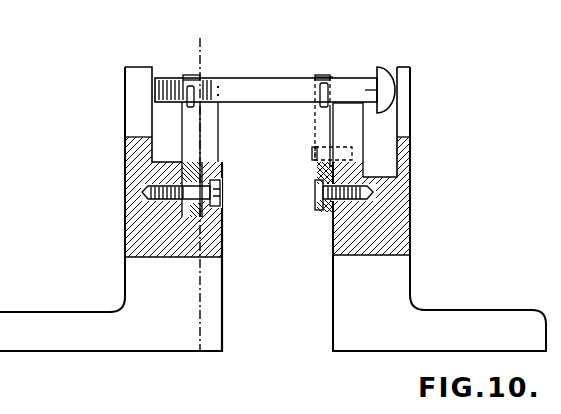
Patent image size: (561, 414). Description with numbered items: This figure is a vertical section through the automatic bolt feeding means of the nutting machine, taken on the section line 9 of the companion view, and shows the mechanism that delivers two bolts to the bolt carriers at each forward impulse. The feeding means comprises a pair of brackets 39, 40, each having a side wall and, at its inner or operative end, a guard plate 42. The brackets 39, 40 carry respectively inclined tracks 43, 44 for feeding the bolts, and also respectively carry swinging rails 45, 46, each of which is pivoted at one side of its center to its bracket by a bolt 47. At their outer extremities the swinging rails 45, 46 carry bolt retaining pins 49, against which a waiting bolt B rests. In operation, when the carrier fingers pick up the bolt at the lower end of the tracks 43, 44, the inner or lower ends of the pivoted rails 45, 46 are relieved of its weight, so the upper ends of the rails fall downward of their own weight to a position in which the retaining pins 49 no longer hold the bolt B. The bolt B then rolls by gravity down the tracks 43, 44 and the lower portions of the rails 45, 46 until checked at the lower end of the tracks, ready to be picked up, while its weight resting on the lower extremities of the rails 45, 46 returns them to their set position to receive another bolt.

The section line 9— 9 is at (200, 28).
The bracket 39 is at (113, 349).
The bracket 40 is at (388, 350).
The guard plate 42 is at (7, 231).
The inclined track 43 is at (212, 155).
The inclined track 44 is at (343, 125).
The swinging rail 45 is at (193, 123).
The swinging rail 46 is at (318, 116).
The bolt 47 is at (222, 192).
The bolt retaining pin 49 is at (200, 82).
The bolt B is at (362, 78).